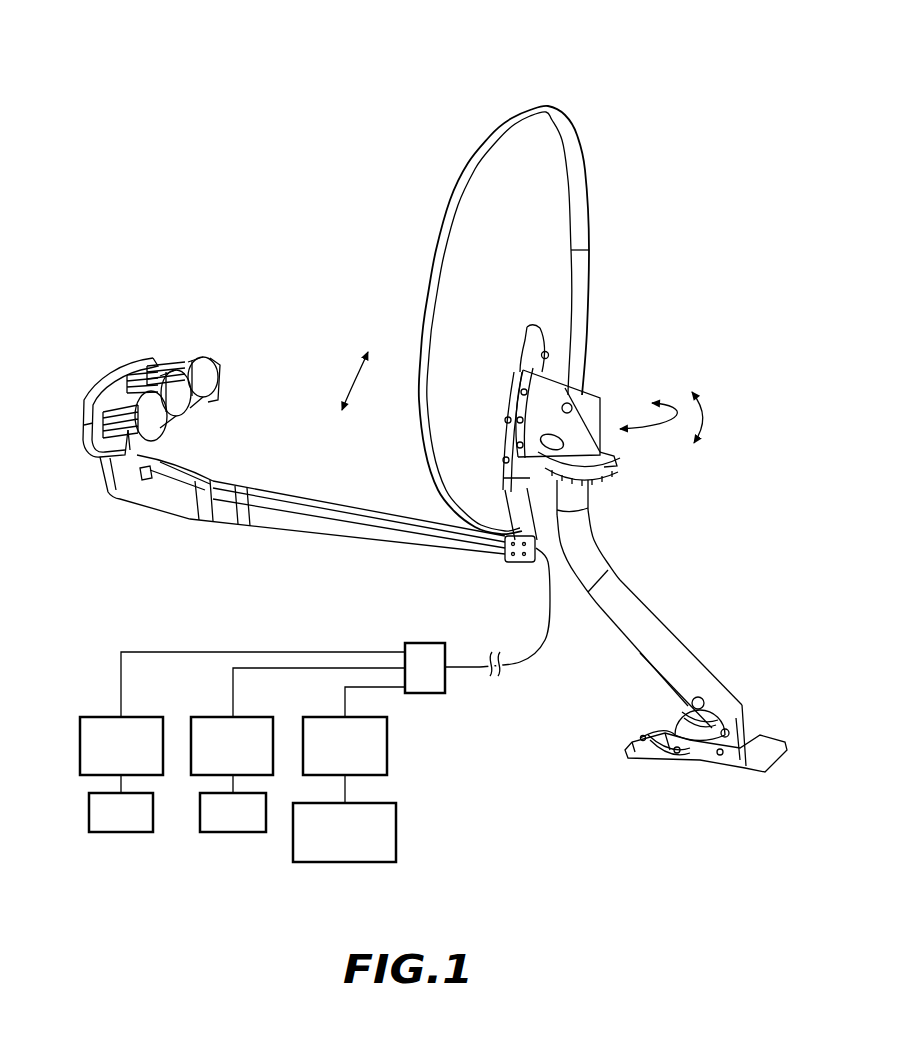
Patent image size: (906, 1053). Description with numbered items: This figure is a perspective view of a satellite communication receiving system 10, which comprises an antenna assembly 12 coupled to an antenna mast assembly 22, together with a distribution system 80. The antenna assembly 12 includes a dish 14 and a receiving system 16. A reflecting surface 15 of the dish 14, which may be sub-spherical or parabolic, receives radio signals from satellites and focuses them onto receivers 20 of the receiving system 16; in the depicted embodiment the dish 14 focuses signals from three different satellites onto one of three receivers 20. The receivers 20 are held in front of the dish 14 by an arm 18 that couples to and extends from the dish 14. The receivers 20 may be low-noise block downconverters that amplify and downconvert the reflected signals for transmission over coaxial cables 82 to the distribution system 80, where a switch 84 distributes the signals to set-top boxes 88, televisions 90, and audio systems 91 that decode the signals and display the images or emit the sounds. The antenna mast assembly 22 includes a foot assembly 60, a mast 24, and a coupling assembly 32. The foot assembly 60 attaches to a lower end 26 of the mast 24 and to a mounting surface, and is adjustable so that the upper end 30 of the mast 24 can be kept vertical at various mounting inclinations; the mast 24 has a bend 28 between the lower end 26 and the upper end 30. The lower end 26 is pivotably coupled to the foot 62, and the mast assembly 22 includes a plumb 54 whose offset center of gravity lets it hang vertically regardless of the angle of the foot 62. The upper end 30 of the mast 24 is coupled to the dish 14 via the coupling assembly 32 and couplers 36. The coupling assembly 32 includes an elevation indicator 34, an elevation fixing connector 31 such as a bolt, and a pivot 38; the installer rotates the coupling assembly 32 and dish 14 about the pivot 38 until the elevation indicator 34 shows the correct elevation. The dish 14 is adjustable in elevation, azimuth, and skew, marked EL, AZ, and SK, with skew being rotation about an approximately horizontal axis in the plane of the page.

The communication receiving system 10 is at (602, 64).
The antenna assembly 12 is at (280, 180).
The dish 14 is at (625, 248).
The reflecting surface 15 is at (452, 210).
The receiving system 16 is at (70, 378).
The arm 18 is at (322, 562).
The receivers 20 is at (200, 428).
The antenna mast assembly 22 is at (765, 518).
The mast 24 is at (665, 610).
The lower end 26 is at (680, 655).
The bend 28 is at (600, 560).
The upper end 30 is at (585, 505).
The elevation fixing connector 31 is at (620, 449).
The coupling assembly 32 is at (620, 406).
The elevation indicator 34 is at (605, 478).
The couplers 36 is at (545, 345).
The pivot 38 is at (582, 398).
The plumb 54 is at (680, 704).
The foot assembly 60 is at (713, 717).
The foot 62 is at (770, 760).
The distribution system 80 is at (445, 625).
The coaxial cables 82 is at (385, 687).
The switch 84 is at (444, 681).
The set-top boxes 88 is at (106, 712).
The televisions 90 is at (118, 834).
The audio systems 91 is at (324, 864).